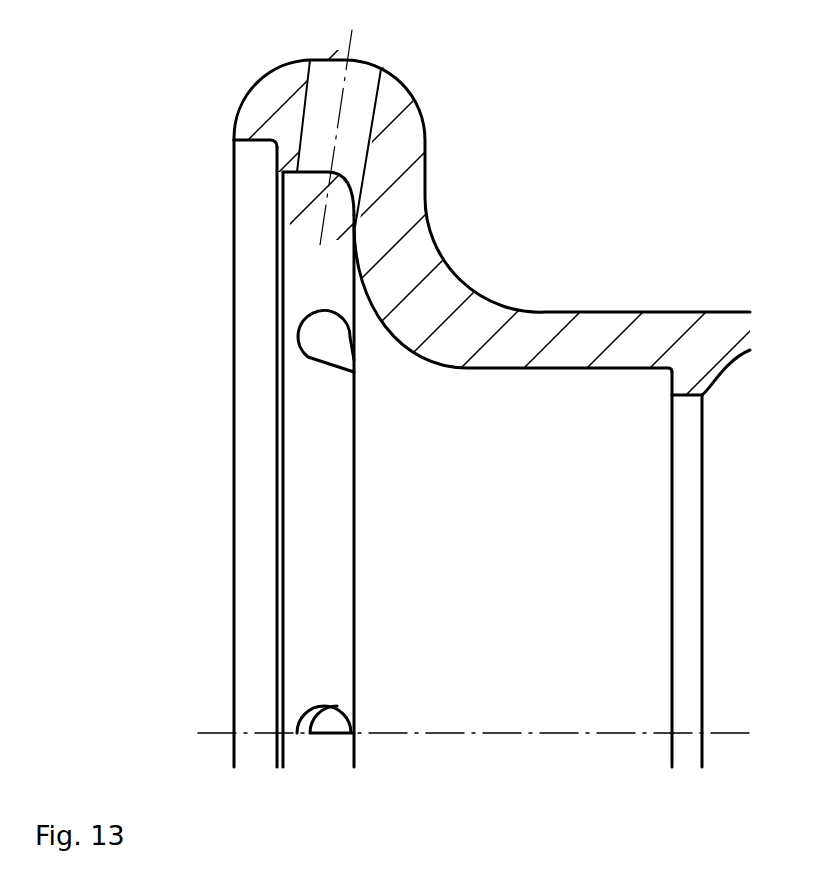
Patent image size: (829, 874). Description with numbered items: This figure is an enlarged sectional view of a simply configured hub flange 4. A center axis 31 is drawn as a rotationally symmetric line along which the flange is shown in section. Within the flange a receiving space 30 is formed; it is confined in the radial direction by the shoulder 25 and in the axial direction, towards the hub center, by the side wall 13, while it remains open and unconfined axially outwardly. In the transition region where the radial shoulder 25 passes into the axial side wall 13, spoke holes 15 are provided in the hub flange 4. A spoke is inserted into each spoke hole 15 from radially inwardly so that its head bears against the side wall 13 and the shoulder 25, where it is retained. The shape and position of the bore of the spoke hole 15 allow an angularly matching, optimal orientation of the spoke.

The hub flange 4 is at (258, 105).
The spoke hole 15 is at (332, 67).
The shoulder 25 is at (290, 176).
The side wall 13 is at (345, 250).
The receiving space 30 is at (307, 445).
The center axis 31 is at (453, 742).